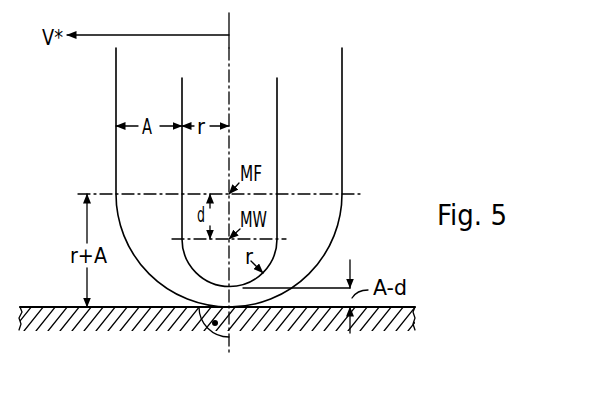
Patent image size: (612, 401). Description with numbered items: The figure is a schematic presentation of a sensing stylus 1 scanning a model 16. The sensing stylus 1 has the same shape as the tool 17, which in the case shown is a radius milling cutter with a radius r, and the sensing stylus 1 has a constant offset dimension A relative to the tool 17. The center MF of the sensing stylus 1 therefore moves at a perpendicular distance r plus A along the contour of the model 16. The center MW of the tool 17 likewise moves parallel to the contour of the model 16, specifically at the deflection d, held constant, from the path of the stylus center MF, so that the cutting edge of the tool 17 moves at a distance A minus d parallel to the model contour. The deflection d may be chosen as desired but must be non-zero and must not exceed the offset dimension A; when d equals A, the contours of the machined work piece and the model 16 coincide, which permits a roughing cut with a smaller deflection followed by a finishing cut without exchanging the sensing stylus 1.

The sensing stylus 1 is at (343, 162).
The model 16 is at (54, 307).
The tool 17 is at (277, 126).